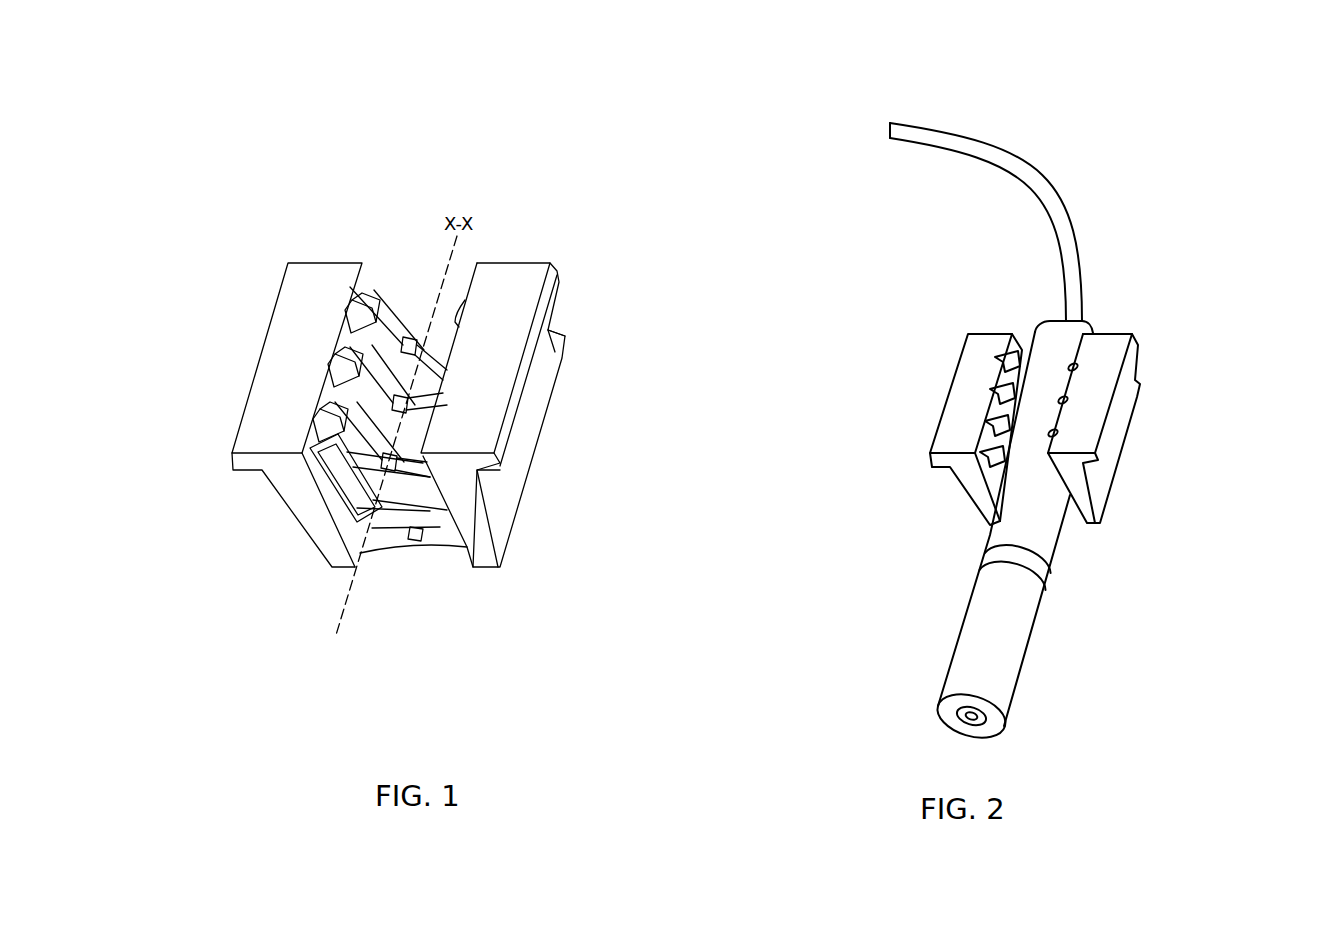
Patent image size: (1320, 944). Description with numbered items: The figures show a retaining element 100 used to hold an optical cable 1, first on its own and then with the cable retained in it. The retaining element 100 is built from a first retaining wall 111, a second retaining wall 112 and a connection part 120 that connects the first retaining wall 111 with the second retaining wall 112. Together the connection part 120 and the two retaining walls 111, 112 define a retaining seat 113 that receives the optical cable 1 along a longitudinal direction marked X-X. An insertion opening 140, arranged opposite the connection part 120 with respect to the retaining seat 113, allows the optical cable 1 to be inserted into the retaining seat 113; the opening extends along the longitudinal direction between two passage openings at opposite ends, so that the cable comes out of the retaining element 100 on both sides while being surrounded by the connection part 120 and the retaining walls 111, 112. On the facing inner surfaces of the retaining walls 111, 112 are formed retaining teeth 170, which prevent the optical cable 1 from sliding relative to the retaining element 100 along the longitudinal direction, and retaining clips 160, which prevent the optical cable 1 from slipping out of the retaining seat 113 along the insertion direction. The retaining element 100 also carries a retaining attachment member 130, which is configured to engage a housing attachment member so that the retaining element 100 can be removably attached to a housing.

In FIG. 2, the retaining element 100 is at (1124, 266).
In FIG. 2, the optical cable 1 is at (958, 640).
In FIG. 1, the first retaining wall 111 is at (302, 495).
In FIG. 1, the second retaining wall 112 is at (467, 487).
In FIG. 1, the retaining seat 113 is at (415, 288).
In FIG. 1, the connection part 120 is at (417, 553).
In FIG. 1, the retaining attachment member 130 is at (566, 337).
In FIG. 1, the insertion opening 140 is at (383, 240).
In FIG. 1, the retaining clips 160 is at (326, 410).
In FIG. 1, the retaining teeth 170 is at (345, 490).